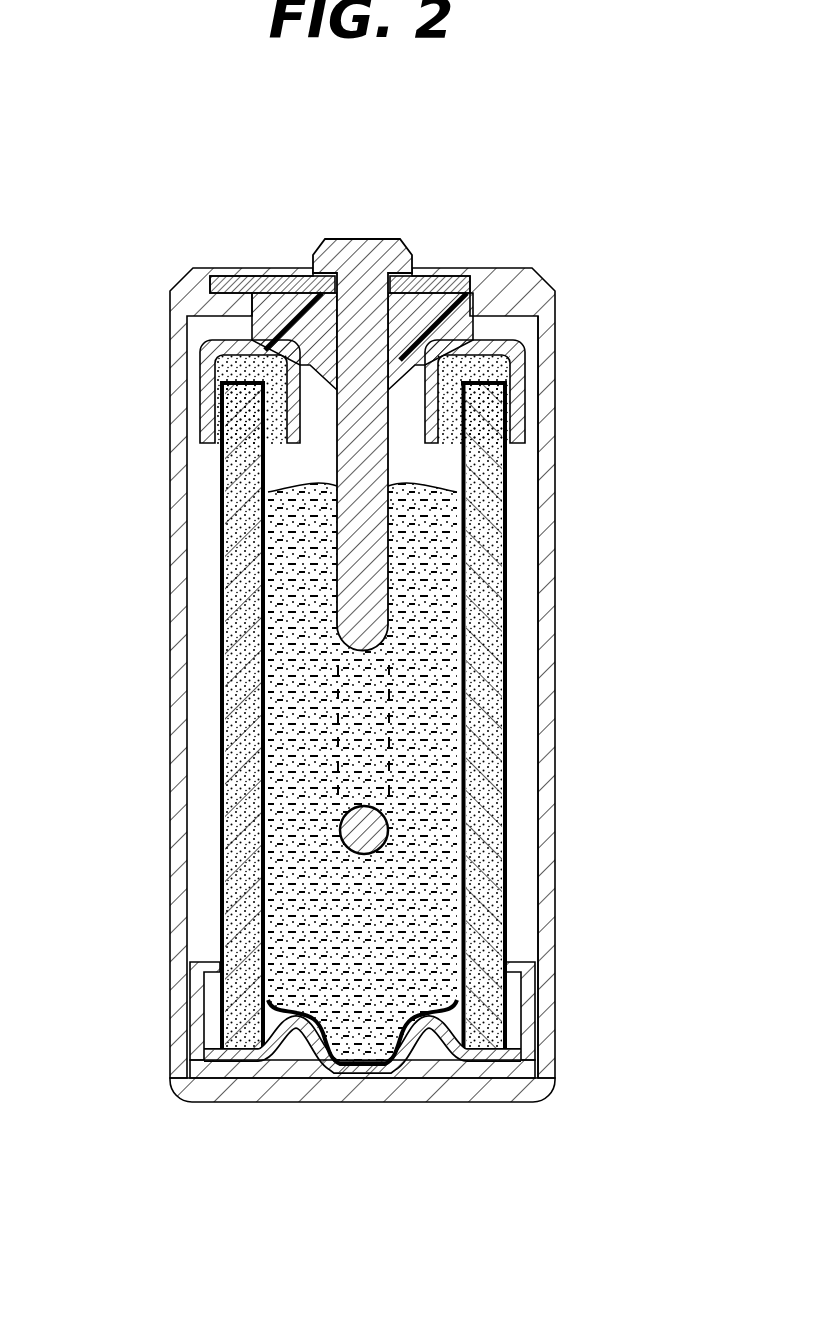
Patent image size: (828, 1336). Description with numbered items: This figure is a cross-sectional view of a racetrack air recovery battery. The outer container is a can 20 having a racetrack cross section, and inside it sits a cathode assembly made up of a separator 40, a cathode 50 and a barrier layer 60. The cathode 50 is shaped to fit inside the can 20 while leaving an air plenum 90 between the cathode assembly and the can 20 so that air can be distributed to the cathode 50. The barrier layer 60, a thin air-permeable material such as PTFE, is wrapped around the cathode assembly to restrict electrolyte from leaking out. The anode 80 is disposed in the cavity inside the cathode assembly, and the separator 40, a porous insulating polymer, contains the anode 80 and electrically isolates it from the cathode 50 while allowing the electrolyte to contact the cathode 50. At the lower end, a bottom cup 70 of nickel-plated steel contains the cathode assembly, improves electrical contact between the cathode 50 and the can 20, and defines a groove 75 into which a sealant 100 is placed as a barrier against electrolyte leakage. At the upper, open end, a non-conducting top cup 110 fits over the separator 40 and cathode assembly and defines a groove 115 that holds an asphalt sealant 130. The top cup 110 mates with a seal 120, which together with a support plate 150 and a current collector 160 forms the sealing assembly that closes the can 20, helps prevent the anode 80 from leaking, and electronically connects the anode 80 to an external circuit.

The can 20 is at (283, 1090).
The separator 40 is at (473, 760).
The cathode 50 is at (490, 687).
The barrier layer 60 is at (512, 588).
The bottom cup 70 is at (522, 1040).
The groove 75 is at (497, 1067).
The anode 80 is at (288, 892).
The air plenum 90 is at (523, 888).
The sealant 100 is at (462, 1015).
The top cup 110 is at (507, 353).
The groove 115 is at (508, 378).
The seal 120 is at (222, 287).
The asphalt sealant 130 is at (275, 422).
The support plate 150 is at (440, 287).
The current collector 160 is at (370, 248).